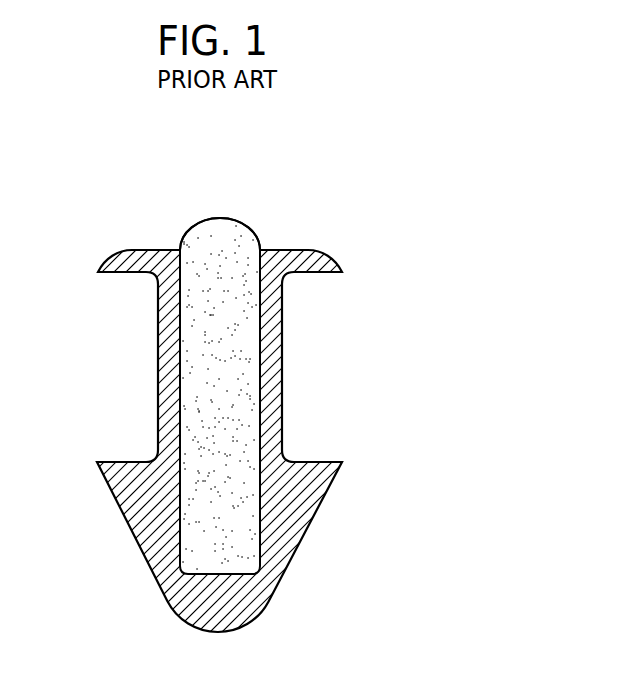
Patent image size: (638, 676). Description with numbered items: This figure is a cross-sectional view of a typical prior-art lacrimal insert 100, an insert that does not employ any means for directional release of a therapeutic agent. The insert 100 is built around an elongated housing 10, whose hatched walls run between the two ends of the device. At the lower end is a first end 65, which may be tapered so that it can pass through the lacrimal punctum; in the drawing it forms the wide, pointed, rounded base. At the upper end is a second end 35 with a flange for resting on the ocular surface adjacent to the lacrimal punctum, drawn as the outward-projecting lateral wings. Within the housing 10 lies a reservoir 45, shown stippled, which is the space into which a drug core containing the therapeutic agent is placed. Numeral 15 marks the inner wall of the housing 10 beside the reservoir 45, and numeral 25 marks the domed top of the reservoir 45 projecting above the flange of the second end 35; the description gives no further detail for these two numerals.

The lacrimal insert 100 is at (95, 367).
The elongated housing 10 is at (272, 395).
The inner wall 15 is at (262, 317).
The top dome 25 is at (262, 240).
The second end 35 is at (107, 262).
The reservoir 45 is at (203, 235).
The first end 65 is at (148, 564).